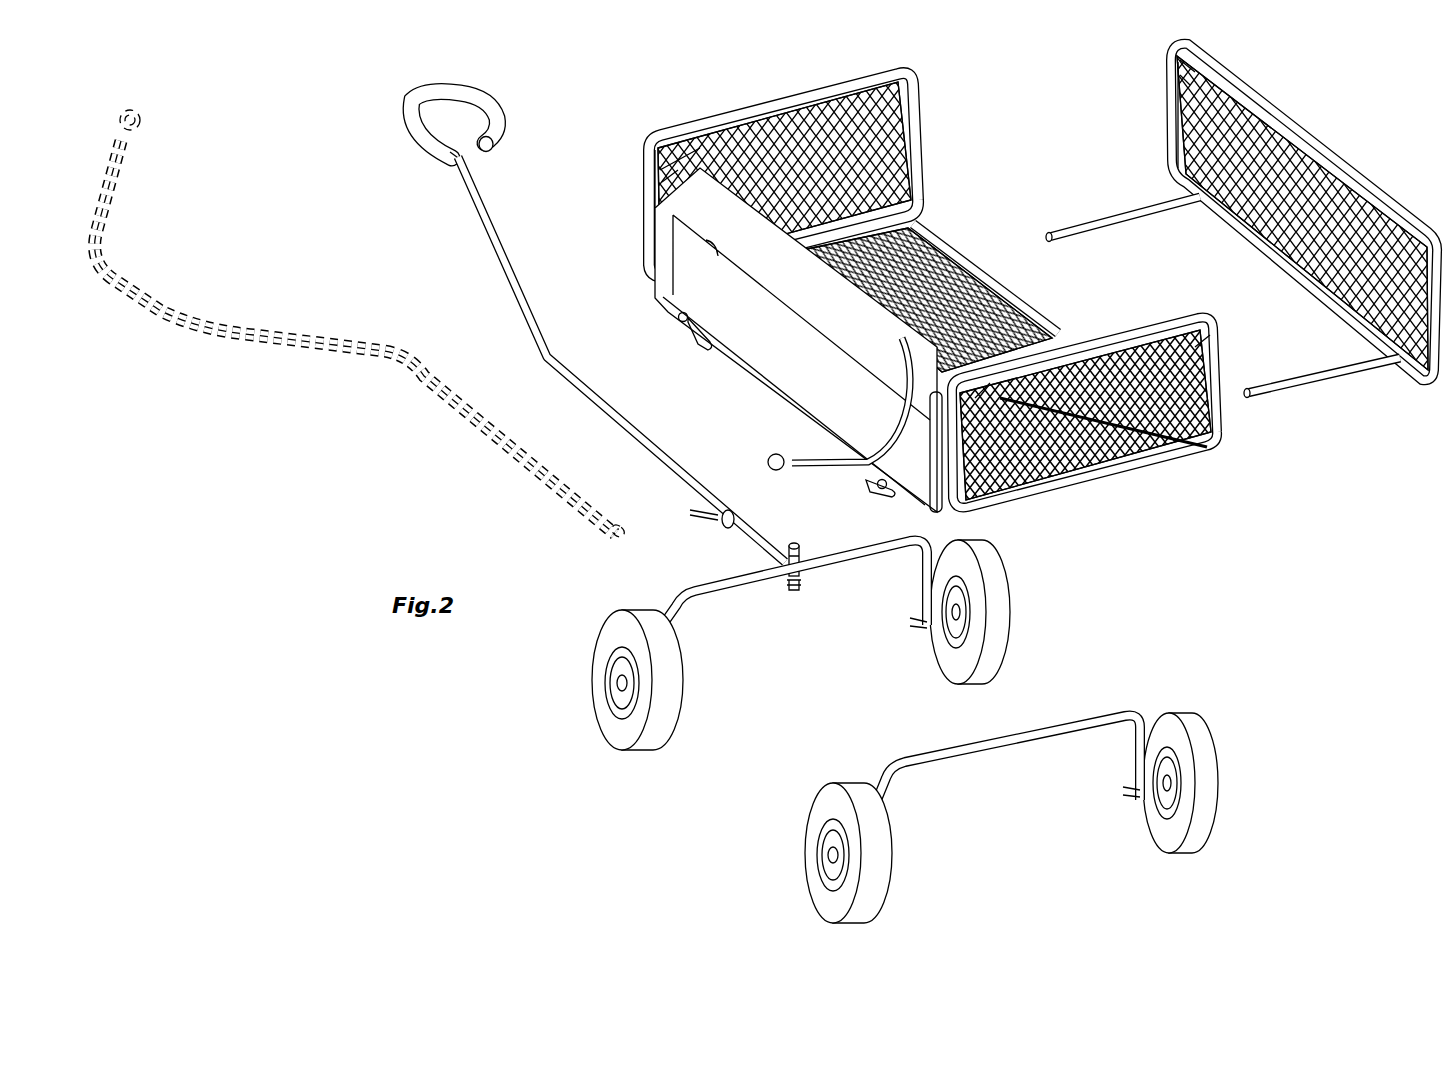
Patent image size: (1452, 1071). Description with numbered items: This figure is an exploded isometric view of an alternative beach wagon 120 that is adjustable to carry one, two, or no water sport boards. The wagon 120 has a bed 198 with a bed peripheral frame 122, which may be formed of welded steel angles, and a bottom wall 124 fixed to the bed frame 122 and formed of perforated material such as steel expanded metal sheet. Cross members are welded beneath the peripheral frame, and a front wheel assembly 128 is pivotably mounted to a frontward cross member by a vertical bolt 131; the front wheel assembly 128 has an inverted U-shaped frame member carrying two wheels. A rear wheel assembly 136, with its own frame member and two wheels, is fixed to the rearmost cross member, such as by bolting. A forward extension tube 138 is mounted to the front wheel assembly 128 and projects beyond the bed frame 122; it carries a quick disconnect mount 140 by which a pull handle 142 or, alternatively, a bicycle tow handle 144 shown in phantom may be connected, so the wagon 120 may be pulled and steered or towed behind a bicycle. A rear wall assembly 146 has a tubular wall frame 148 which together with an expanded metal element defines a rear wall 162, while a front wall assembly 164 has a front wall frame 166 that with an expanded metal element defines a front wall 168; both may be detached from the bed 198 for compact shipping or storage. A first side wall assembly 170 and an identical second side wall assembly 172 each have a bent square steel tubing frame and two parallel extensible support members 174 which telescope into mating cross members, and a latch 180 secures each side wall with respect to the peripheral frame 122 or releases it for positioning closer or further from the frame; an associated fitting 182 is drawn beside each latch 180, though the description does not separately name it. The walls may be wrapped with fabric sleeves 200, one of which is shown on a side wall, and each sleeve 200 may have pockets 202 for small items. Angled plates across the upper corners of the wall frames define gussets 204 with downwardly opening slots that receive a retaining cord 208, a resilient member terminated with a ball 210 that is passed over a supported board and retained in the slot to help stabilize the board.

The beach wagon 120 is at (1015, 128).
The bed peripheral frame 122 is at (955, 272).
The bottom wall 124 is at (947, 257).
The front wheel assembly 128 is at (797, 645).
The vertical bolt 131 is at (800, 547).
The rear wheel assembly 136 is at (1010, 818).
The forward extension tube 138 is at (735, 542).
The quick disconnect mount 140 is at (730, 505).
The pull handle 142 is at (598, 329).
The bicycle tow handle 144 is at (150, 298).
The rear wall assembly 146 is at (1128, 405).
The tubular wall frame 148 is at (1225, 333).
The rear wall 162 is at (1087, 500).
The front wall assembly 164 is at (752, 93).
The front wall frame 166 is at (786, 151).
The front wall 168 is at (783, 151).
The first side wall assembly 170 is at (754, 340).
The second side wall assembly 172 is at (1277, 212).
The extensible support member 174 is at (1120, 215).
The latch 180 is at (680, 320).
The hinge bracket 182 is at (700, 340).
The bed 198 is at (937, 230).
The fabric sleeve 200 is at (787, 407).
The pocket 202 is at (705, 232).
The gusset 204 is at (1203, 343).
The retaining cord 208 is at (830, 460).
The ball 210 is at (776, 471).